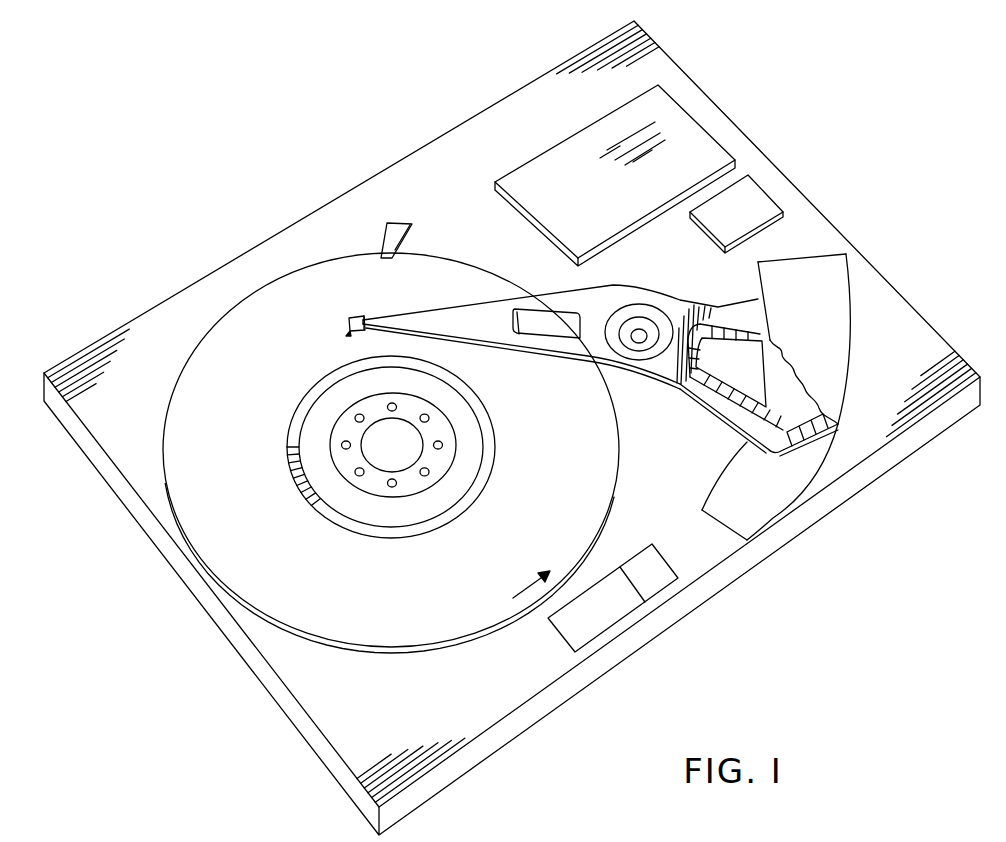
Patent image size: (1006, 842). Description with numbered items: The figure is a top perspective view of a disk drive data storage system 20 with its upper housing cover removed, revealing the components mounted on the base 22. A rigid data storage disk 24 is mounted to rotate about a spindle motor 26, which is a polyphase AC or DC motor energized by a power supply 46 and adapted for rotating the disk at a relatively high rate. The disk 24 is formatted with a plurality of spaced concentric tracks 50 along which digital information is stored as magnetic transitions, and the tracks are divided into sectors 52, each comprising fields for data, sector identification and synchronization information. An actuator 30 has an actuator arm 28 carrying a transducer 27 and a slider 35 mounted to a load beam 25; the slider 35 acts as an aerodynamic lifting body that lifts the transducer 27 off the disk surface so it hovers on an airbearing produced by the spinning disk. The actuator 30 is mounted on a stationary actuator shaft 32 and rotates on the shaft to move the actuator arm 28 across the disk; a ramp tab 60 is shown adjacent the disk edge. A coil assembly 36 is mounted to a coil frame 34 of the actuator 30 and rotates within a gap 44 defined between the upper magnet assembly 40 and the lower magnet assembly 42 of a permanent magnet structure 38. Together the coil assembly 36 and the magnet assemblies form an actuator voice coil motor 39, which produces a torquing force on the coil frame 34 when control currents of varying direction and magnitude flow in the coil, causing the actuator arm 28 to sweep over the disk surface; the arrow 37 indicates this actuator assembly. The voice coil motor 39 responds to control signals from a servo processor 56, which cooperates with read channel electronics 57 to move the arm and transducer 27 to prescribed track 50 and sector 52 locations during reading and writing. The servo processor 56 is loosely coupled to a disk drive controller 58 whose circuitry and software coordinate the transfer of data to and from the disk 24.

The data storage system 20 is at (802, 133).
The base plate 22 is at (668, 614).
The data storage disk 24 is at (391, 453).
The load beam 25 is at (373, 323).
The spindle motor 26 is at (410, 467).
The transducer 27 is at (349, 334).
The actuator arm 28 is at (488, 327).
The actuator 30 is at (654, 378).
The actuator shaft 32 is at (639, 330).
The coil frame 34 is at (693, 303).
The slider 35 is at (352, 318).
The coil assembly 36 is at (710, 343).
The actuator assembly 37 is at (634, 390).
The permanent magnet structure 38 is at (849, 285).
The actuator voice coil motor 39 is at (744, 441).
The upper magnet assembly 40 is at (822, 332).
The lower magnet assembly 42 is at (722, 510).
The gap 44 is at (823, 412).
The power supply 46 is at (615, 175).
The track 50 is at (302, 403).
The sector 52 is at (288, 478).
The servo processor 56 is at (613, 598).
The read channel electronics 57 is at (641, 581).
The disk drive controller 58 is at (736, 214).
The ramp tab 60 is at (402, 222).